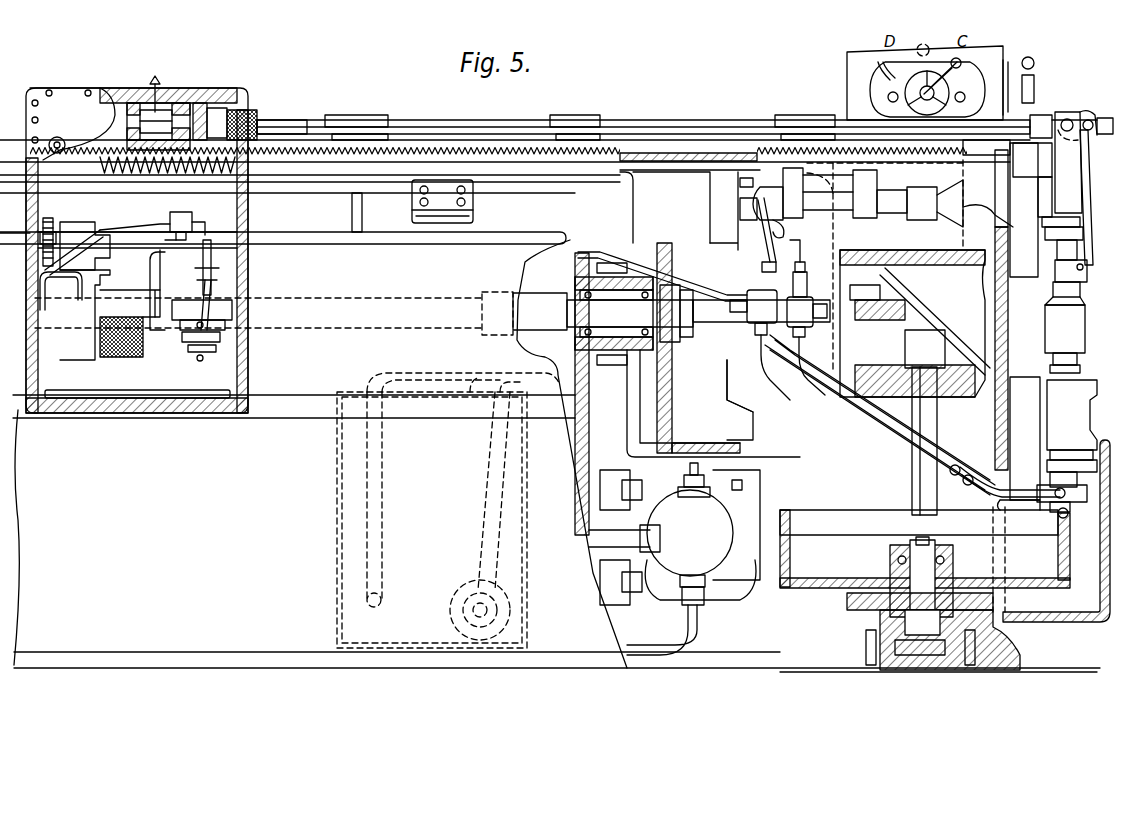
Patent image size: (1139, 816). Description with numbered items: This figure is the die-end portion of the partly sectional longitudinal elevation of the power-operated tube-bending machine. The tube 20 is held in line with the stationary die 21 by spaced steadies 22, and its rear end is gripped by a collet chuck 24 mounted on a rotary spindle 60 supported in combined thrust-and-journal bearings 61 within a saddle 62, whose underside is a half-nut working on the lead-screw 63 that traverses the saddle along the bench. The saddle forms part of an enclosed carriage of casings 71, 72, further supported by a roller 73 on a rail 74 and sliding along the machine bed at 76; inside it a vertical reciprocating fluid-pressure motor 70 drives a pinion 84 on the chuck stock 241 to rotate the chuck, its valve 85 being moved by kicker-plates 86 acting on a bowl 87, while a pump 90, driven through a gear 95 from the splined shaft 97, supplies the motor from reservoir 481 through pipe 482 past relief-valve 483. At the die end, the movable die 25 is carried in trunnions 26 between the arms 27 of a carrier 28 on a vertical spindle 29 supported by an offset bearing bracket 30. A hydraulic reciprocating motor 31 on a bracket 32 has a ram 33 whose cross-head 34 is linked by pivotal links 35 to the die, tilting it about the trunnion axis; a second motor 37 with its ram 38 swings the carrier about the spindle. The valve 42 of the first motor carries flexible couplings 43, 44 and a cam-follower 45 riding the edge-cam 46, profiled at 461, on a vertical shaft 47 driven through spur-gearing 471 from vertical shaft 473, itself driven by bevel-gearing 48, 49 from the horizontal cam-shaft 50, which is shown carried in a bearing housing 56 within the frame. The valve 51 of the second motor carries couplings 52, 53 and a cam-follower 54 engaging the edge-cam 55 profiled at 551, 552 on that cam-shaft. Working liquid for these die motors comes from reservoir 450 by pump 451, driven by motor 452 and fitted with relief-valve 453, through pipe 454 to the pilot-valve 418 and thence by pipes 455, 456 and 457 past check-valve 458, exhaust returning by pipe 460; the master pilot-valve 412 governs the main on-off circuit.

The tube 20 is at (708, 120).
The stationary die 21 is at (1042, 115).
The steadies 22 is at (380, 118).
The collet chuck 24 is at (256, 118).
The movable die 25 is at (1090, 118).
The trunnions 26 is at (1067, 118).
The arms 27 is at (1078, 178).
The carrier 28 is at (1085, 217).
The vertical spindle 29 is at (1082, 250).
The offset bearing bracket 30 is at (1085, 230).
The hydraulic reciprocating motor 31 is at (1088, 386).
The bracket 32 is at (1015, 380).
The ram 33 is at (1080, 362).
The cross-head 34 is at (1088, 275).
The pivotal links 35 is at (1092, 160).
The hydraulic reciprocating motor 37 is at (848, 205).
The ram 38 is at (905, 213).
The valve 42 is at (1097, 468).
The flexible coupling 43 is at (1030, 475).
The flexible coupling 44 is at (985, 487).
The cam-follower 45 is at (1068, 513).
The edge-cam 46 is at (1068, 530).
The vertical shaft 47 is at (935, 575).
The bevel-gearing 48 is at (945, 350).
The bevel-gearing 49 is at (895, 285).
The cam-shaft 50 is at (416, 298).
The valve 51 is at (790, 200).
The flexible coupling 52 is at (787, 230).
The flexible coupling 53 is at (766, 255).
The cam-follower 54 is at (745, 208).
The edge-cam 55 is at (752, 345).
The bearing 56 is at (634, 314).
The rotary spindle 60 is at (150, 118).
The combined thrust-and-journal bearings 61 is at (133, 105).
The saddle 62 is at (160, 100).
The lead-screw 63 is at (115, 155).
The reciprocating fluid-pressure motor 70 is at (232, 278).
The casing 71 is at (60, 100).
The casing 72 is at (240, 95).
The roller 73 is at (62, 138).
The rail 74 is at (315, 168).
The machine bed surface 76 is at (288, 396).
The pinion 84 is at (203, 103).
The valve 85 is at (225, 338).
The kicker-plates 86 is at (473, 213).
The bowl 87 is at (202, 358).
The pump 90 is at (128, 262).
The gear 95 is at (52, 222).
The splined shaft 97 is at (475, 244).
The stock 241 is at (246, 110).
The master pilot-valve 412 is at (1028, 57).
The pilot-valve 418 is at (950, 80).
The reservoir 450 is at (337, 600).
The pump 451 is at (712, 585).
The motor 452 is at (710, 605).
The relief-valve 453 is at (748, 508).
The pipe 454 is at (700, 468).
The pipe 455 is at (830, 318).
The pipe 456 is at (955, 465).
The pipe 457 is at (810, 280).
The check-valve 458 is at (778, 315).
The return pipe 460 is at (622, 252).
The cam profile 461 is at (1000, 507).
The spur-gearing 471 is at (847, 603).
The vertical shaft 473 is at (912, 475).
The reservoir 481 is at (160, 357).
The pipe 482 is at (207, 262).
The relief-valve 483 is at (200, 210).
The cam profile 551 is at (745, 187).
The cam profile 552 is at (755, 408).